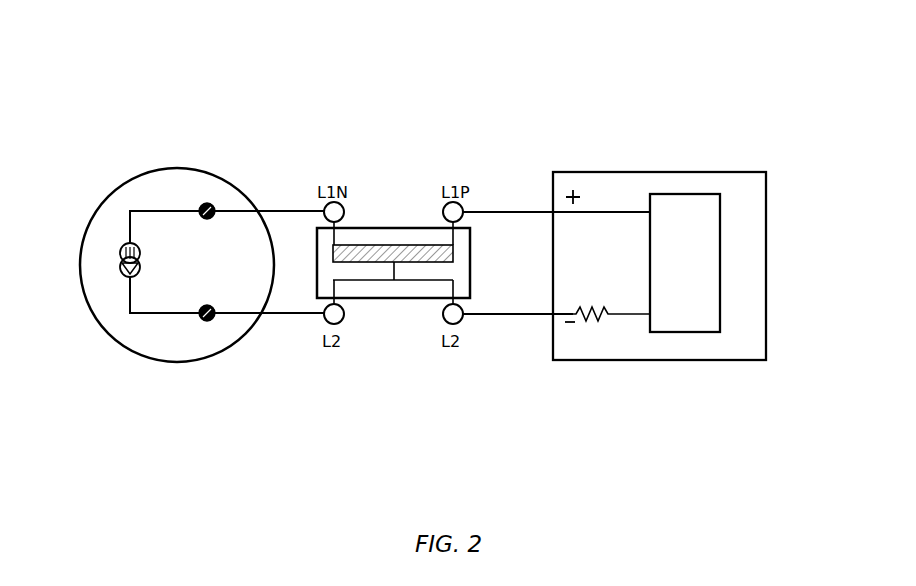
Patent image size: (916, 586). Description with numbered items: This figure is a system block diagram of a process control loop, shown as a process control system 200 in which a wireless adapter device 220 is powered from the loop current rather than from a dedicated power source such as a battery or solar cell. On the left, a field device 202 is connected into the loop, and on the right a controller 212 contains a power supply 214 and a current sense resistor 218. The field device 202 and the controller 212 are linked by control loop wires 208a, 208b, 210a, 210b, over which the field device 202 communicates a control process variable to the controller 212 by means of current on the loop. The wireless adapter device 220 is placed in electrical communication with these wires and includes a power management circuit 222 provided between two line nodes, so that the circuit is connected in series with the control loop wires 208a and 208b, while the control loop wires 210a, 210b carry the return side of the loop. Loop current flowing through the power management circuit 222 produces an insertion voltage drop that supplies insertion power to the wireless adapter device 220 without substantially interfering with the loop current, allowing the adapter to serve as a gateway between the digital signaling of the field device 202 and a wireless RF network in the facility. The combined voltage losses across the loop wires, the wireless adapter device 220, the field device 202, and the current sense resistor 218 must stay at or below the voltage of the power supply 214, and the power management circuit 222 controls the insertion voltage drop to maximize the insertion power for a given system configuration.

The process control system 200 is at (658, 429).
The field device 202 is at (112, 193).
The control loop wire 208a is at (512, 211).
The control loop wire 208b is at (290, 210).
The control loop wire 210a is at (510, 315).
The control loop wire 210b is at (300, 315).
The controller 212 is at (717, 192).
The power supply 214 is at (720, 237).
The current sense resistor 218 is at (590, 308).
The wireless adapter device 220 is at (427, 191).
The power management circuit 222 is at (454, 255).